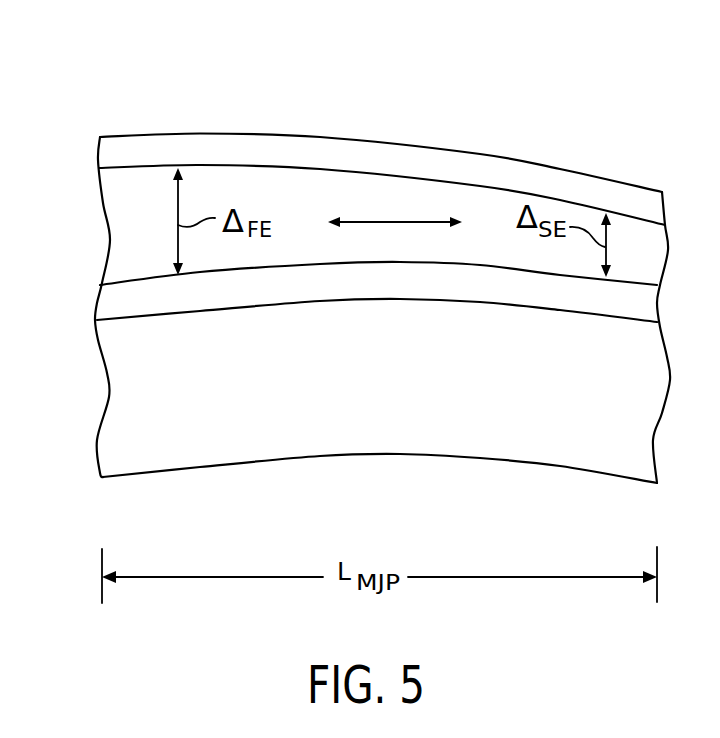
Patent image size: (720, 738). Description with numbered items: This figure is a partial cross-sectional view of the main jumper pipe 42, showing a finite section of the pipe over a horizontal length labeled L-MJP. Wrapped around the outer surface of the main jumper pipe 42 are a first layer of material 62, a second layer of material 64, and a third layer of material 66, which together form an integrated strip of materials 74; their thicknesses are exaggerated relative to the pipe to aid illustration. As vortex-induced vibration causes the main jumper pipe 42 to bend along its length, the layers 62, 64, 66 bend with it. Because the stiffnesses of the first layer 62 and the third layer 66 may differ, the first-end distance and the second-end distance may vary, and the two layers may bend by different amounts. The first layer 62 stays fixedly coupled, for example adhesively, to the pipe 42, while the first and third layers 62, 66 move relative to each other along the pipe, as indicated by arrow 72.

The integrated strip of materials 74 is at (180, 104).
The third layer of material 66 is at (135, 147).
The second layer of material 64 is at (123, 207).
The first layer of material 62 is at (113, 303).
The main jumper pipe 42 is at (230, 438).
The arrow 72 is at (398, 218).